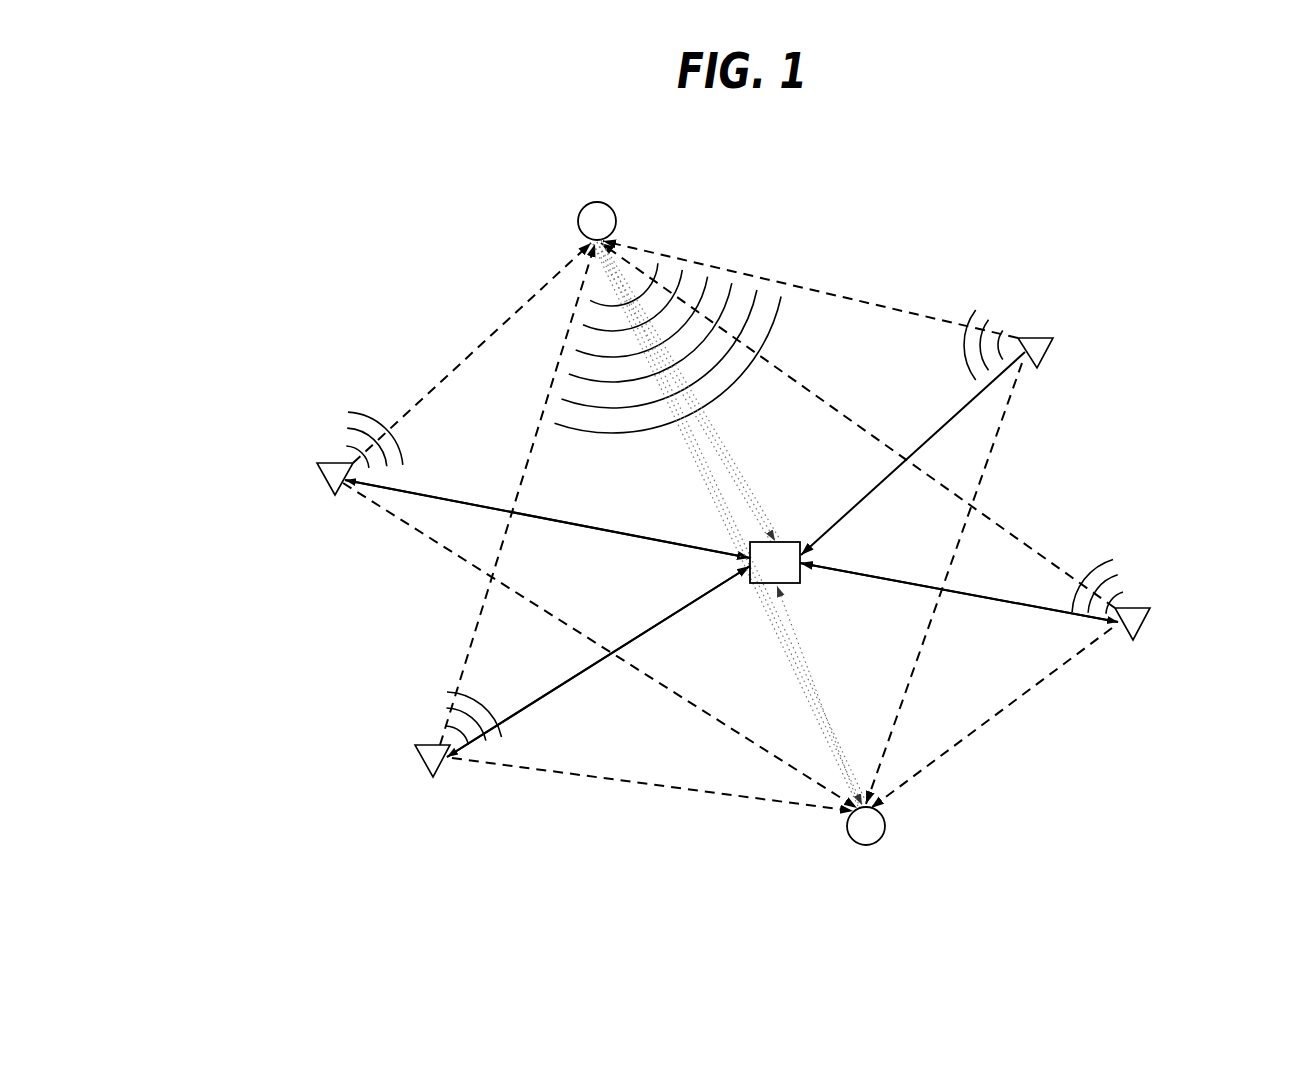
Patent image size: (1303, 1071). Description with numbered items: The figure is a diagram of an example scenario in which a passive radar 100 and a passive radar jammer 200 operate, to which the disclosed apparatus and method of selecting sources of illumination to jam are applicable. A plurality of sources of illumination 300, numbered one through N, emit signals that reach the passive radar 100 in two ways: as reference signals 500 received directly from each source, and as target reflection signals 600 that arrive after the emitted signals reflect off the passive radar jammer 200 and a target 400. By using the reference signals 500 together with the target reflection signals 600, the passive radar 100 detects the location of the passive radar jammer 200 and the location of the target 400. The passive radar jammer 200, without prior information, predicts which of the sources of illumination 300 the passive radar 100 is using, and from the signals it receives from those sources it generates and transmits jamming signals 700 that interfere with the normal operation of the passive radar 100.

The passive radar 100 is at (806, 583).
The passive radar jammer 200 is at (607, 197).
The sources of illumination 300 is at (325, 460).
The target 400 is at (891, 823).
The reference signals 500 is at (632, 636).
The target reflection signals 600 is at (712, 449).
The jamming signals 700 is at (781, 288).